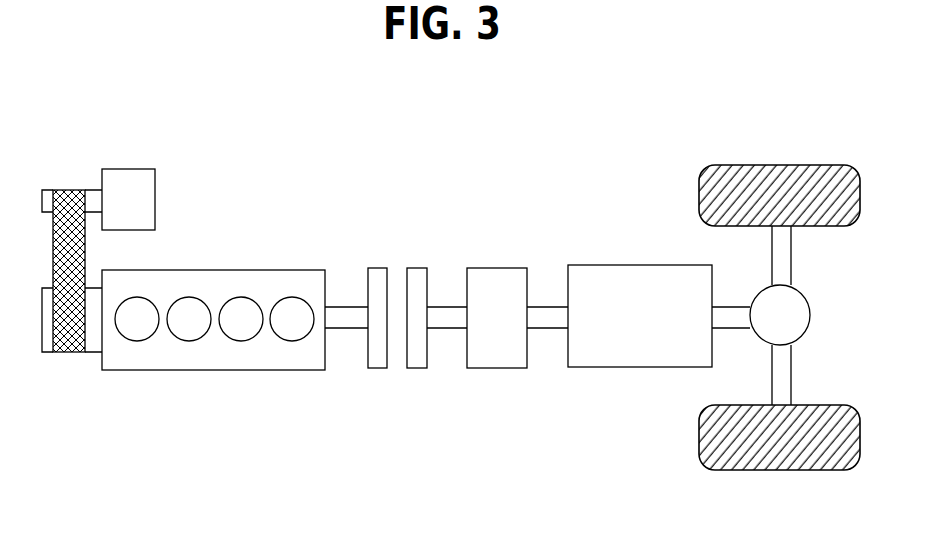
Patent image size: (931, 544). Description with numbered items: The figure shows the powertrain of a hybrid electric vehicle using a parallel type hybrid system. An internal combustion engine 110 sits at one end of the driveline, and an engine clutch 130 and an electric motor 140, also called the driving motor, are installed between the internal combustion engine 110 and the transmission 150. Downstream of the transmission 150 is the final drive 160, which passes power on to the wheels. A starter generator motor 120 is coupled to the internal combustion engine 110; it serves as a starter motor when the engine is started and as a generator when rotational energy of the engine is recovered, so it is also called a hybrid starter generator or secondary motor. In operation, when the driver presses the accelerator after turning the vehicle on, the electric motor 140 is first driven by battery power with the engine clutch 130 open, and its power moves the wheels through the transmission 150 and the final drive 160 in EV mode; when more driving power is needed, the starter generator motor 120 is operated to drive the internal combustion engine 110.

The internal combustion engine 110 is at (300, 270).
The starter generator motor 120 is at (156, 176).
The engine clutch 130 is at (415, 268).
The electric motor 140 is at (493, 268).
The transmission 150 is at (637, 265).
The final drive 160 is at (810, 292).